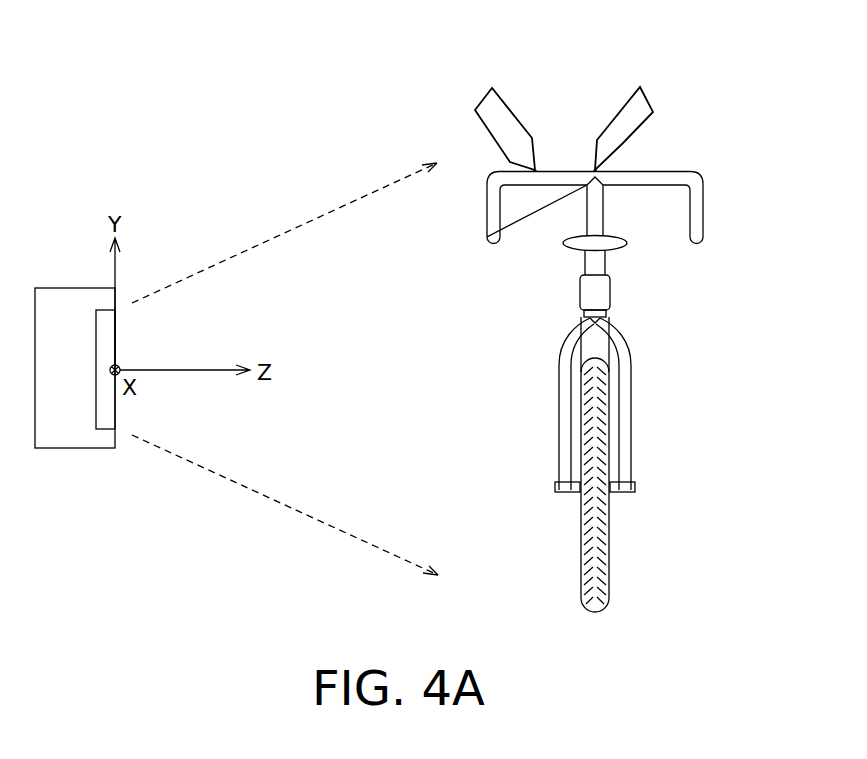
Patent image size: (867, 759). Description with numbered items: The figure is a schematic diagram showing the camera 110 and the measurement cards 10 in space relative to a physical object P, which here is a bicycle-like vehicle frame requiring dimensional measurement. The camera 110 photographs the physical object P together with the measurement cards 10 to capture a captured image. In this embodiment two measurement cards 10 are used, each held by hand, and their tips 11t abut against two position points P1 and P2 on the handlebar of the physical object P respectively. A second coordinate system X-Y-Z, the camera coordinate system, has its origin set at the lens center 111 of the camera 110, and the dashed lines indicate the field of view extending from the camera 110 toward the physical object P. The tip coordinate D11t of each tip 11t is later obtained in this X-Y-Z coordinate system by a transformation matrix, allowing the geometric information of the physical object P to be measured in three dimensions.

The measurement card 10 is at (503, 98).
The tip 11t is at (537, 170).
The camera 110 is at (73, 448).
The lens center 111 is at (113, 368).
The physical object P is at (476, 406).
The position point P1 is at (537, 172).
The position point P2 is at (595, 172).